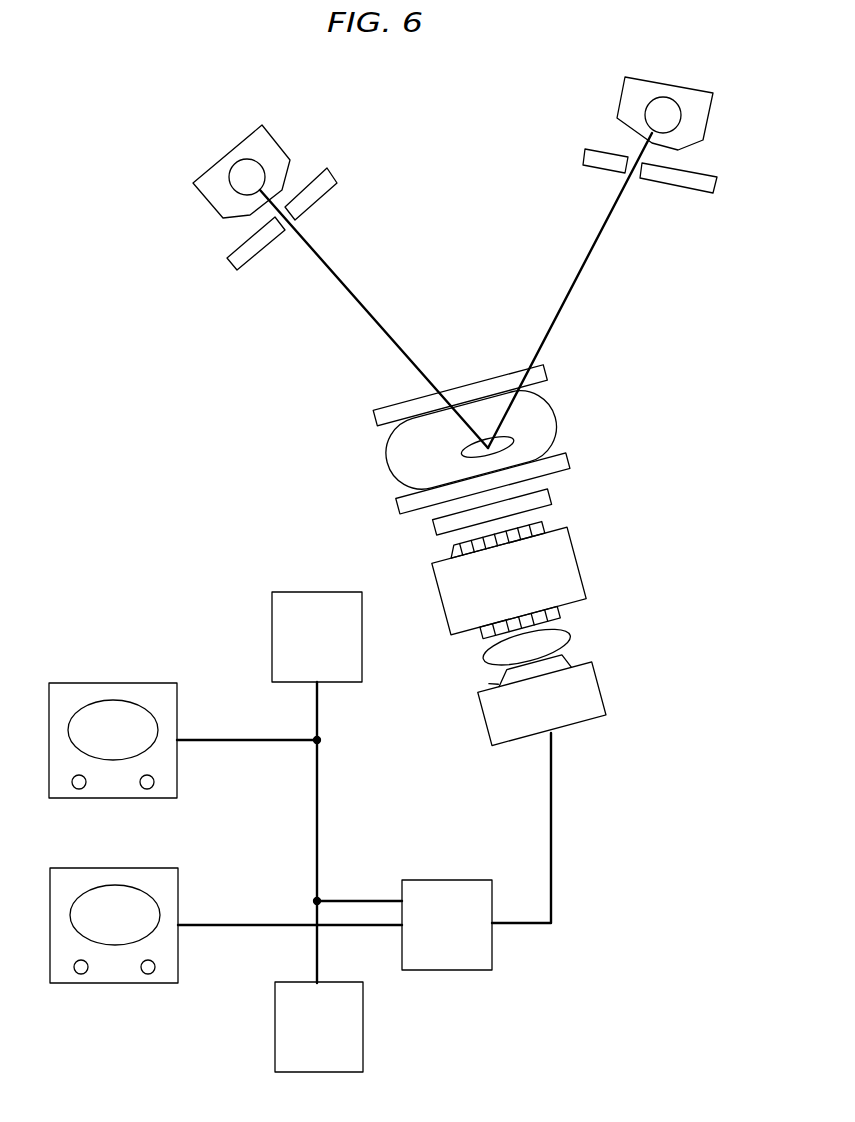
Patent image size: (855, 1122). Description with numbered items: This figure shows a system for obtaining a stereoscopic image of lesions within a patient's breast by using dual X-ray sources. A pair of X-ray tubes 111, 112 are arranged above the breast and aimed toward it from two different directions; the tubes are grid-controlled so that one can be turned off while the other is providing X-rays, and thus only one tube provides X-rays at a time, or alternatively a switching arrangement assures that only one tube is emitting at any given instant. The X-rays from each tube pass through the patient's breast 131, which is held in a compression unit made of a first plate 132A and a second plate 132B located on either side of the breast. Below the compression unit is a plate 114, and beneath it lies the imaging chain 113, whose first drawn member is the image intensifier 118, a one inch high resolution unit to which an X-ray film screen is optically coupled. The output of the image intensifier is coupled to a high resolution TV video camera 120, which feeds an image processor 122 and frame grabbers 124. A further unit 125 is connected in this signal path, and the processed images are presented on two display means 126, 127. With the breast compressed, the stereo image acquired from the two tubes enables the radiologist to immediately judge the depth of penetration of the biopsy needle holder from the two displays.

The X-ray tube 111 is at (277, 140).
The X-ray tube 112 is at (677, 85).
The plate 132A is at (543, 373).
The patient's breast 131 is at (557, 415).
The plate 132B is at (570, 458).
The filter plate 114 is at (550, 497).
The image intensifier 118 is at (580, 562).
The imaging chain 113 is at (590, 630).
The video camera 120 is at (593, 663).
The signal processing unit 125 is at (318, 592).
The display means 127 is at (143, 683).
The display means 126 is at (143, 868).
The frame grabbers 124 is at (342, 982).
The image processor 122 is at (448, 880).